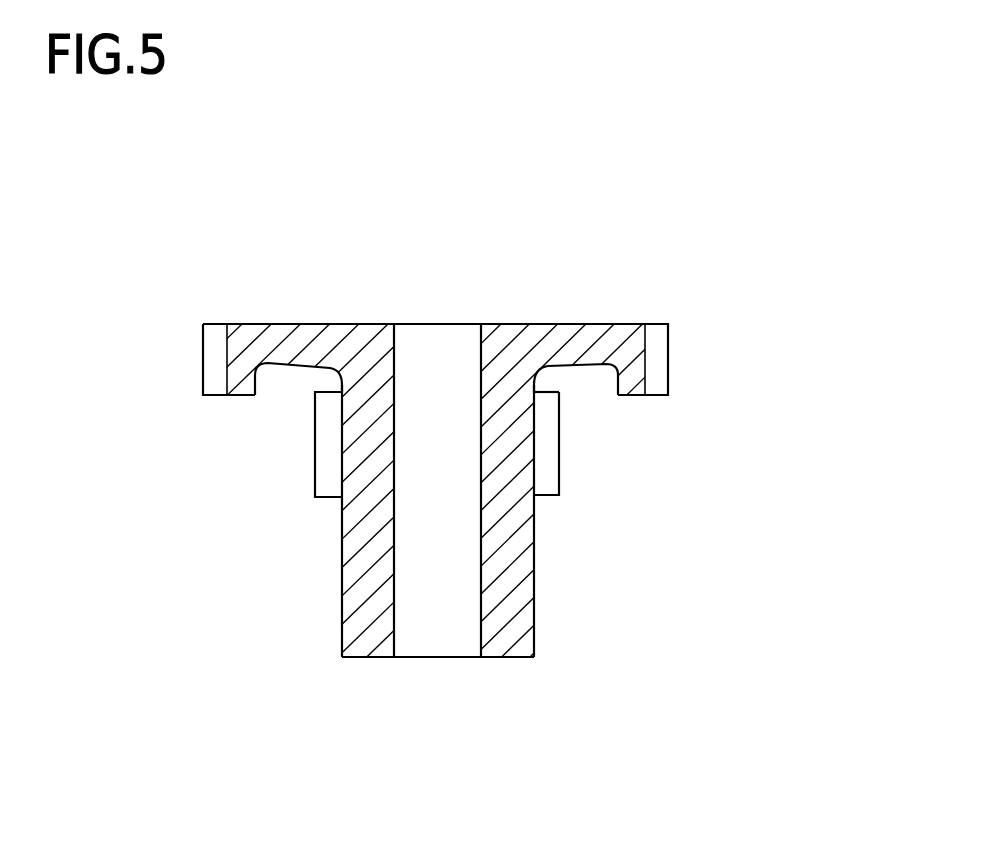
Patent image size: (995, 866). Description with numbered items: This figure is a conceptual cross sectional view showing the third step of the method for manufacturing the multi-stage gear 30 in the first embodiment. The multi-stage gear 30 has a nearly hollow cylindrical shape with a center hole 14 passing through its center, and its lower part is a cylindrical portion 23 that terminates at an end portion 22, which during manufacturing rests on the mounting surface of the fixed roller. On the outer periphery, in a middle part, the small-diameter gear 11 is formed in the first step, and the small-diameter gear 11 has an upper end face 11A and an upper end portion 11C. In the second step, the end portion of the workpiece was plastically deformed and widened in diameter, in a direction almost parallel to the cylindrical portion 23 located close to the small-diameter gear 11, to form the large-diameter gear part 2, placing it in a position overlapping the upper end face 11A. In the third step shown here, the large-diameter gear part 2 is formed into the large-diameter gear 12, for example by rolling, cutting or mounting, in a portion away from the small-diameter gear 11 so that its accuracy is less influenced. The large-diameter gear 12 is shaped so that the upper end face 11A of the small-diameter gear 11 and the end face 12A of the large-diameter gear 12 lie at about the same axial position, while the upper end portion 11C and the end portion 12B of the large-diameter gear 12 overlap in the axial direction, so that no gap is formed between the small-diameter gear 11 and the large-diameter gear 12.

The multi-stage gear 30 is at (497, 461).
The large-diameter gear 12 is at (438, 395).
The end face of the large-diameter gear 12A is at (636, 396).
The end portion of the large-diameter gear 12B is at (636, 387).
The large-diameter gear part 2 is at (240, 380).
The small-diameter gear 11 is at (323, 478).
The upper end face of the small-diameter gear 11A is at (548, 383).
The upper end portion of the small-diameter gear 11C is at (548, 402).
The center hole 14 is at (450, 345).
The cylindrical portion 23 is at (520, 568).
The end portion 22 is at (505, 658).